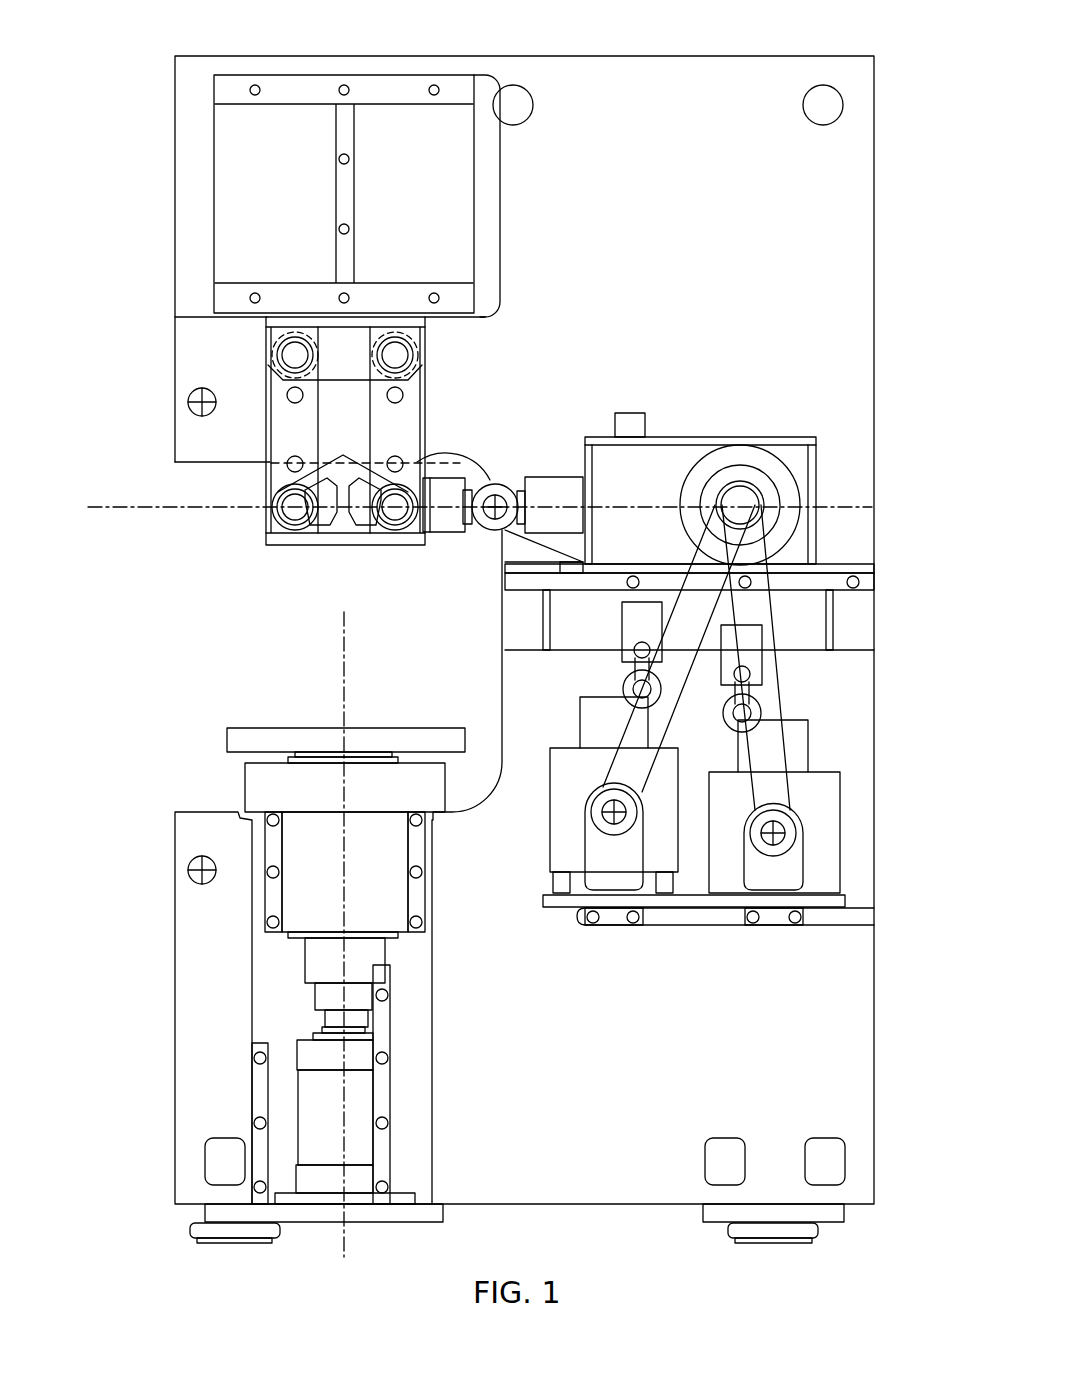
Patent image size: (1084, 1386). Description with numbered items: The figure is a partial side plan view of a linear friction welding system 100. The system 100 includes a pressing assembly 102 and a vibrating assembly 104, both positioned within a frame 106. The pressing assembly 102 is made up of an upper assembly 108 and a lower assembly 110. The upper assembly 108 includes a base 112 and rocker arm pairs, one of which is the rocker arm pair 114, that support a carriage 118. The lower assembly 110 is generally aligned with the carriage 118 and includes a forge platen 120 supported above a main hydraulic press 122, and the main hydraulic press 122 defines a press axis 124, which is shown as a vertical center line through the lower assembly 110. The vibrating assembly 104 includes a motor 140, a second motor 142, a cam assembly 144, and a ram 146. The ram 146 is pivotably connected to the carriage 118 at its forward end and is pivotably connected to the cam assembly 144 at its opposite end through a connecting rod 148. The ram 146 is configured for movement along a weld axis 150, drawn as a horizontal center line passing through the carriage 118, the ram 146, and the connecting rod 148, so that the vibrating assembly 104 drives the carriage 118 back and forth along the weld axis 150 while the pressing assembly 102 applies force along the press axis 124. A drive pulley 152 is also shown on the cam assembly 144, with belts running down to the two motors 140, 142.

The linear friction welding system 100 is at (99, 96).
The pressing assembly 102 is at (126, 950).
The vibrating assembly 104 is at (737, 360).
The frame 106 is at (873, 277).
The upper assembly 108 is at (558, 206).
The lower assembly 110 is at (464, 1004).
The base 112 is at (500, 300).
The rocker arm pair 114 is at (420, 415).
The carriage 118 is at (270, 538).
The forge platen 120 is at (275, 727).
The main hydraulic press 122 is at (392, 1095).
The press axis 124 is at (345, 695).
The motor 140 is at (550, 837).
The motor 142 is at (845, 807).
The cam assembly 144 is at (782, 437).
The ram 146 is at (455, 480).
The connecting rod 148 is at (545, 477).
The weld axis 150 is at (158, 503).
The drive pulley 152 is at (690, 580).